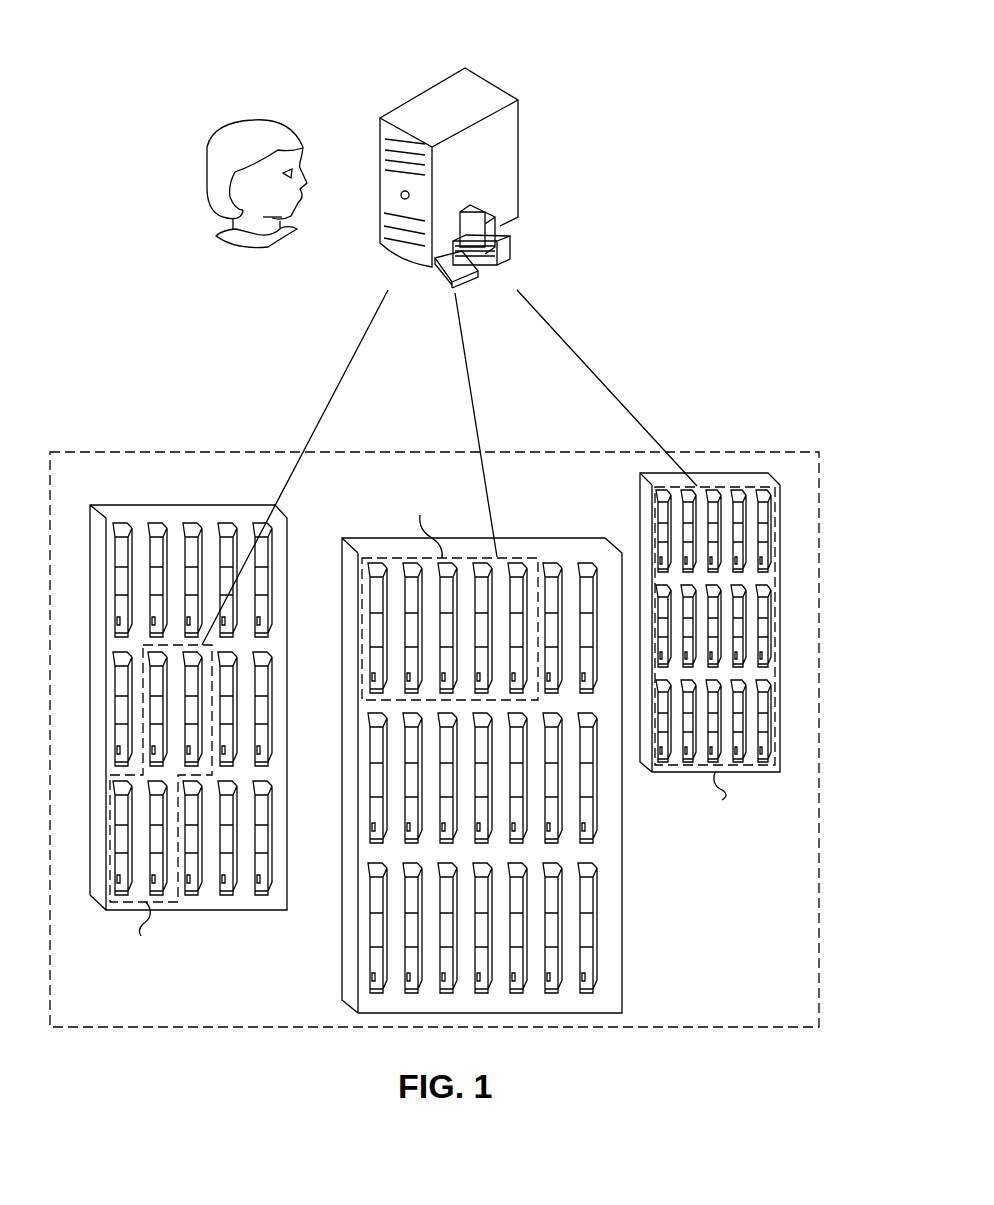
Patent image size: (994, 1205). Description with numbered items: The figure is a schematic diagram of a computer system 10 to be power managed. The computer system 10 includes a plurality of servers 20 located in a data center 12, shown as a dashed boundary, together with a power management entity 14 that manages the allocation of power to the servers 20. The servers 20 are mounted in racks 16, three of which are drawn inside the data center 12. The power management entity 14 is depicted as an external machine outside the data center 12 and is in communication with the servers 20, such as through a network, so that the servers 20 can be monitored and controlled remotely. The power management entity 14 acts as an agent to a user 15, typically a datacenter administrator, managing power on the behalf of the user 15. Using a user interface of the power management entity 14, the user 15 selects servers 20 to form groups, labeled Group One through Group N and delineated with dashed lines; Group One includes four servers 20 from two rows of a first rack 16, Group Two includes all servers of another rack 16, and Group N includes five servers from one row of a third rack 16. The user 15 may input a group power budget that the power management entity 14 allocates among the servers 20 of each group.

The computer system 10 is at (583, 60).
The data center 12 is at (718, 452).
The power management entity 14 is at (483, 78).
The user 15 is at (207, 157).
The rack 16 is at (180, 505).
The server 20 is at (162, 562).